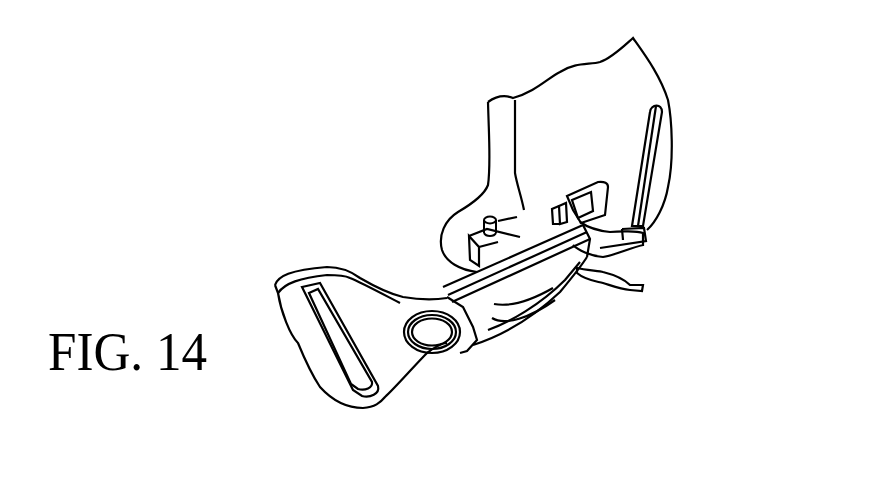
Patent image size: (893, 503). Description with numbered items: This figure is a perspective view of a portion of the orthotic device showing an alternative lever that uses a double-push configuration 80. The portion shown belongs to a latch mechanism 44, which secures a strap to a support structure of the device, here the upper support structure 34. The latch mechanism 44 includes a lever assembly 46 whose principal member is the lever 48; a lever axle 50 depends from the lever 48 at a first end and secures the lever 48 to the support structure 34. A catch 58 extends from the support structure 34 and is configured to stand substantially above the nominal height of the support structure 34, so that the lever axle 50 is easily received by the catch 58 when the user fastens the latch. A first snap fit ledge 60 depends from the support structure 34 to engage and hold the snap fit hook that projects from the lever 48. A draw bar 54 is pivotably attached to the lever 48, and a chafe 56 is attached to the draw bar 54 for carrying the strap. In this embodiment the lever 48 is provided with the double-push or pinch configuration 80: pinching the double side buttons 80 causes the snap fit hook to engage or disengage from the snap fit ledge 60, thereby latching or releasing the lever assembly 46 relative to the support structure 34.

The upper support structure 34 is at (633, 82).
The latch mechanism 44 is at (541, 346).
The lever assembly 46 is at (486, 349).
The lever 48 is at (527, 240).
The lever axle 50 is at (490, 217).
The draw bar 54 is at (427, 287).
The chafe 56 is at (323, 357).
The catch 58 is at (430, 280).
The first snap fit ledge 60 is at (583, 196).
The double-push configuration 80 is at (640, 290).